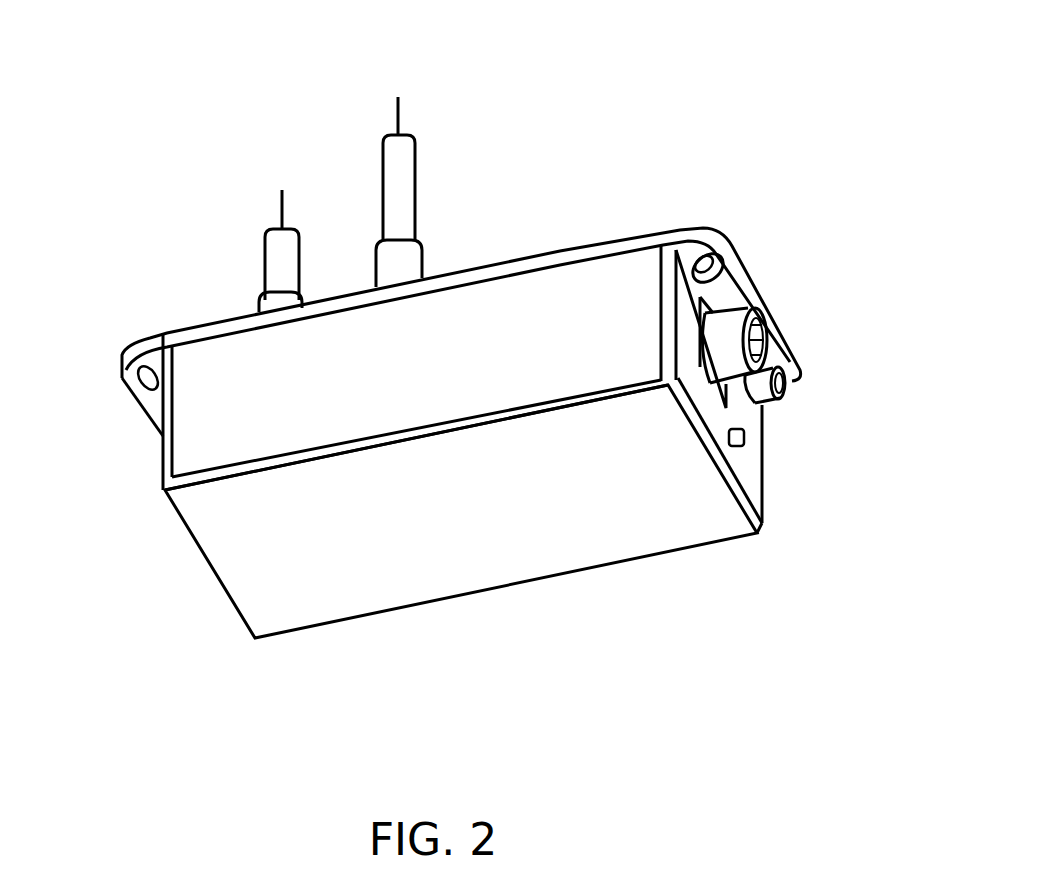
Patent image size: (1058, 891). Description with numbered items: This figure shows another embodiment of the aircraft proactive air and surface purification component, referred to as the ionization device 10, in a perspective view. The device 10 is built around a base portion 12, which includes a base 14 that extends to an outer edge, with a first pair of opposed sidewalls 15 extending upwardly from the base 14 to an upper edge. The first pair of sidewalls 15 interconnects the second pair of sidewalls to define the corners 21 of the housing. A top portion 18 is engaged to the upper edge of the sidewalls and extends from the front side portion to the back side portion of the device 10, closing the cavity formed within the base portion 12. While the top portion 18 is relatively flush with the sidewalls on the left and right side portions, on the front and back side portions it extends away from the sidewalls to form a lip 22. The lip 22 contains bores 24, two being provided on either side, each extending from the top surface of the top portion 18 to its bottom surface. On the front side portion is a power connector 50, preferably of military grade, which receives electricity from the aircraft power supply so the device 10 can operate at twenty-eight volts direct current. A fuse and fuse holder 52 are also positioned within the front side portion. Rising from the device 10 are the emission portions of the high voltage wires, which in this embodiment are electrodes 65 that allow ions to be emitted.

The ionization device 10 is at (755, 115).
The base portion 12 is at (225, 593).
The base 14 is at (590, 545).
The first pair of opposed sidewalls 15 is at (488, 307).
The top portion 18 is at (627, 243).
The corners 21 is at (165, 450).
The lip 22 is at (740, 297).
The bore 24 is at (718, 268).
The power connector 50 is at (760, 338).
The fuse and fuse holder 52 is at (790, 390).
The electrode 65 is at (280, 207).